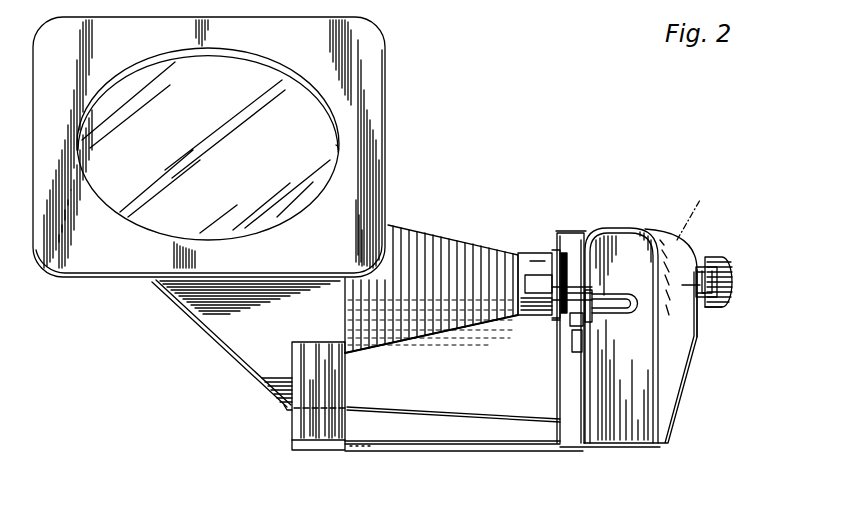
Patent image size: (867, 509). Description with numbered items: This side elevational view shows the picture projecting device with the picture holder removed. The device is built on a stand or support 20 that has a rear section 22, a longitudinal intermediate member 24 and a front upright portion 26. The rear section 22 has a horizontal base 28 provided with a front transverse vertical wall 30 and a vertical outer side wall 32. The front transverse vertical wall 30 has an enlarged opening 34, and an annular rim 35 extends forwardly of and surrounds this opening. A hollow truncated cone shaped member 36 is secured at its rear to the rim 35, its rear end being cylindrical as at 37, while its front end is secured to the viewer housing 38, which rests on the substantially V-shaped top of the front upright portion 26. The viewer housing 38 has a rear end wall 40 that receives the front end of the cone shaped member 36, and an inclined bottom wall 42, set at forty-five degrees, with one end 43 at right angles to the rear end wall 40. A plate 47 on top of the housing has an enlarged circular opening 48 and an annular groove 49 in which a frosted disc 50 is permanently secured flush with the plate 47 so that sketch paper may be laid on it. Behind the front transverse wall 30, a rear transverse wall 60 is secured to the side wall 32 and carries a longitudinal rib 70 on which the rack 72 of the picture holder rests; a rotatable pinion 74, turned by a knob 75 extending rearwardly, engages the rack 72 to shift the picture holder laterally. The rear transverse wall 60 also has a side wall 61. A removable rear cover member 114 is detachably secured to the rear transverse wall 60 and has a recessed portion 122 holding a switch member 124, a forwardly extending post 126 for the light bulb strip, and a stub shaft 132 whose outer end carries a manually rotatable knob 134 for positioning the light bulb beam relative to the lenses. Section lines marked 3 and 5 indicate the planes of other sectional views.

The stand or support 20 is at (438, 406).
The rear section 22 is at (684, 451).
The longitudinal intermediate member 24 is at (477, 452).
The front upright portion 26 is at (302, 436).
The horizontal base 28 is at (642, 448).
The front transverse vertical wall 30 is at (560, 373).
The vertical outer side wall 32 is at (568, 233).
The enlarged opening 34 is at (563, 250).
The annular rim 35 is at (553, 320).
The hollow truncated cone shaped member 36 is at (455, 238).
The cylindrical rear end 37 is at (535, 252).
The viewer housing 38 is at (214, 365).
The rear end wall 40 is at (355, 343).
The inclined bottom wall 42 is at (183, 313).
The end of inclined bottom wall 43 is at (287, 410).
The plate 47 is at (365, 90).
The enlarged circular opening 48 is at (322, 88).
The annular groove 49 is at (338, 148).
The disc 50 is at (232, 77).
The rear transverse wall 60 is at (583, 237).
The side wall 61 is at (633, 412).
The longitudinal rib 70 is at (572, 350).
The rack 72 is at (580, 330).
The rotatable pinion 74 is at (578, 317).
The knob 75 is at (613, 297).
The rear cover member 114 is at (710, 341).
The recessed portion 122 is at (705, 215).
The switch member 124 is at (718, 304).
The forwardly extending post 126 is at (730, 275).
The stub shaft 132 is at (698, 268).
The manually rotatable knob 134 is at (730, 260).
The section line 3- 3 is at (582, 233).
The section line 5- 5 is at (654, 240).